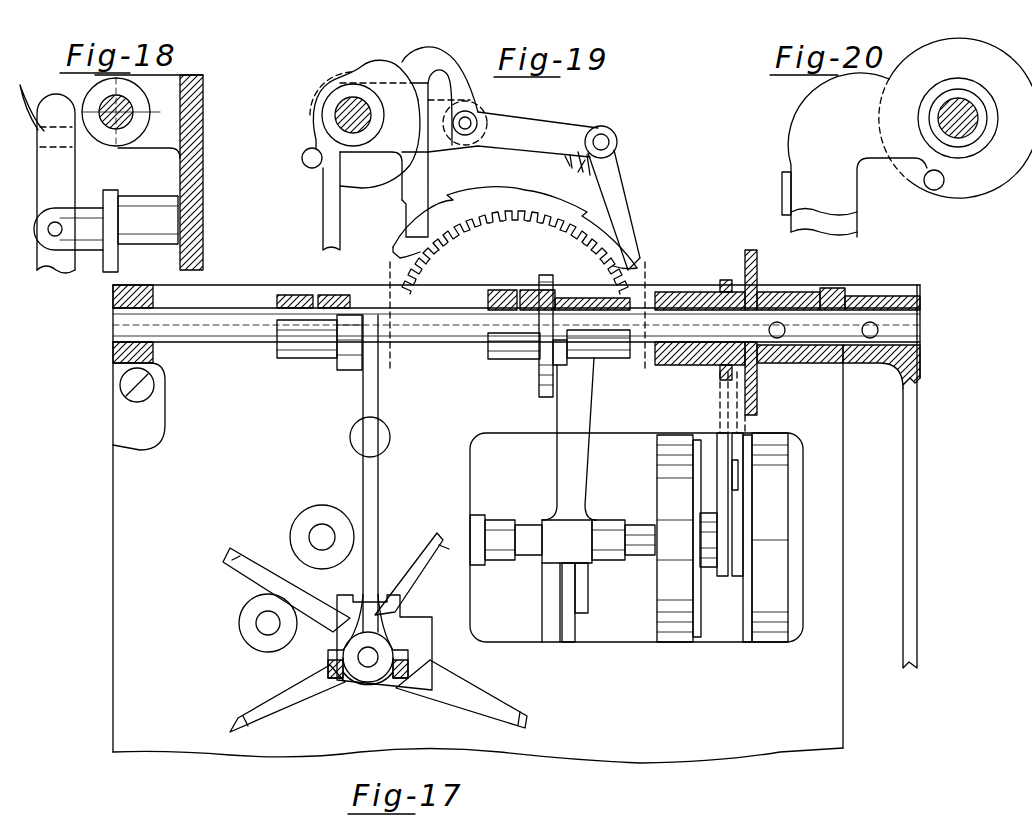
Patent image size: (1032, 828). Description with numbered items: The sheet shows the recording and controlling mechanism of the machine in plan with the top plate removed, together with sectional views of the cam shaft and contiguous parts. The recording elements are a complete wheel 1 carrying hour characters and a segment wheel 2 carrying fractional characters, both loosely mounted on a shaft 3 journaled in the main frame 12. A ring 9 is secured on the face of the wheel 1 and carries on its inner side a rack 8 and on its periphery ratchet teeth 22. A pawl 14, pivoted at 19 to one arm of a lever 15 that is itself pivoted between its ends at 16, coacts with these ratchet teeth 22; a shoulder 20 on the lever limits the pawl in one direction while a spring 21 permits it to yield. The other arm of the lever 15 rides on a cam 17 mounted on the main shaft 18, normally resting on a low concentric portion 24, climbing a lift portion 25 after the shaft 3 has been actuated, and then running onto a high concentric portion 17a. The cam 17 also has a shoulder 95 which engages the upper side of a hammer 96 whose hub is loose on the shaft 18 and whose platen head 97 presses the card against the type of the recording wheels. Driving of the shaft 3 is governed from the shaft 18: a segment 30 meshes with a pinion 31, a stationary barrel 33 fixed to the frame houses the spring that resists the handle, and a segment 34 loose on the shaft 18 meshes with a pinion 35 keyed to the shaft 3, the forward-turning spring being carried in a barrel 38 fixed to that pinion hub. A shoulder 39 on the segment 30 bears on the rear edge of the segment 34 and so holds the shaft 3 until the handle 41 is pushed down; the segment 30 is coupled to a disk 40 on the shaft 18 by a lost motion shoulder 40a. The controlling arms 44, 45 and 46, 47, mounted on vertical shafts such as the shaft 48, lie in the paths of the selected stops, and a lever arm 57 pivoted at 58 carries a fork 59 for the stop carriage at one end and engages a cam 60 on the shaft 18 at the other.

In FIG. 17, the recording wheel 1 is at (552, 590).
In FIG. 17, the recording wheel segment 2 is at (588, 598).
In FIG. 17, the shaft 3 is at (640, 530).
In FIG. 19, the rack 8 is at (515, 252).
In FIG. 19, the ring 9 is at (515, 230).
In FIG. 17, the ring 9 is at (570, 626).
In FIG. 18, the main frame 12 is at (203, 160).
In FIG. 19, the main frame 12 is at (428, 175).
In FIG. 19, the pawl 14 is at (616, 178).
In FIG. 19, the lever 15 is at (601, 67).
In FIG. 19, the pivot 16 is at (470, 118).
In FIG. 19, the cam 17 is at (362, 165).
In FIG. 17, the cam 17 is at (533, 382).
In FIG. 19, the high concentric portion 17a is at (405, 150).
In FIG. 18, the main shaft 18 is at (133, 112).
In FIG. 19, the main shaft 18 is at (343, 112).
In FIG. 20, the main shaft 18 is at (955, 135).
In FIG. 17, the main shaft 18 is at (688, 298).
In FIG. 19, the pawl pivot 19 is at (618, 140).
In FIG. 17, the pawl pivot 19 is at (654, 250).
In FIG. 17, the shoulder 20 is at (608, 361).
In FIG. 19, the spring 21 is at (573, 168).
In FIG. 19, the ratchet teeth 22 is at (460, 176).
In FIG. 19, the low concentric portion 24 is at (350, 80).
In FIG. 19, the lift portion 25 is at (372, 60).
In FIG. 20, the segment 30 is at (848, 222).
In FIG. 17, the segment 30 is at (784, 445).
In FIG. 17, the pinion 31 is at (734, 576).
In FIG. 17, the barrel 33 is at (770, 642).
In FIG. 20, the segment 34 is at (850, 188).
In FIG. 17, the segment 34 is at (722, 445).
In FIG. 17, the pinion 35 is at (716, 567).
In FIG. 17, the barrel 38 is at (670, 642).
In FIG. 20, the shoulder 39 is at (782, 186).
In FIG. 20, the disk 40 is at (991, 178).
In FIG. 17, the disk 40 is at (757, 385).
In FIG. 20, the shoulder 40a is at (933, 190).
In FIG. 17, the handle 41 is at (917, 415).
In FIG. 17, the controlling arm 44 is at (290, 698).
In FIG. 17, the controlling arm 45 is at (440, 575).
In FIG. 17, the controlling arm 46 is at (500, 700).
In FIG. 17, the controlling arm 47 is at (262, 582).
In FIG. 17, the vertical shaft 48 is at (368, 667).
In FIG. 18, the lever arm 57 is at (37, 190).
In FIG. 17, the lever arm 57 is at (378, 470).
In FIG. 18, the pivot 58 is at (48, 229).
In FIG. 17, the pivot 58 is at (380, 437).
In FIG. 17, the fork 59 is at (335, 660).
In FIG. 18, the cam 60 is at (30, 128).
In FIG. 17, the cam 60 is at (348, 362).
In FIG. 19, the shoulder 95 is at (300, 157).
In FIG. 17, the shoulder 95 is at (565, 355).
In FIG. 19, the hammer 96 is at (323, 202).
In FIG. 17, the hammer 96 is at (560, 475).
In FIG. 17, the platen head 97 is at (567, 541).